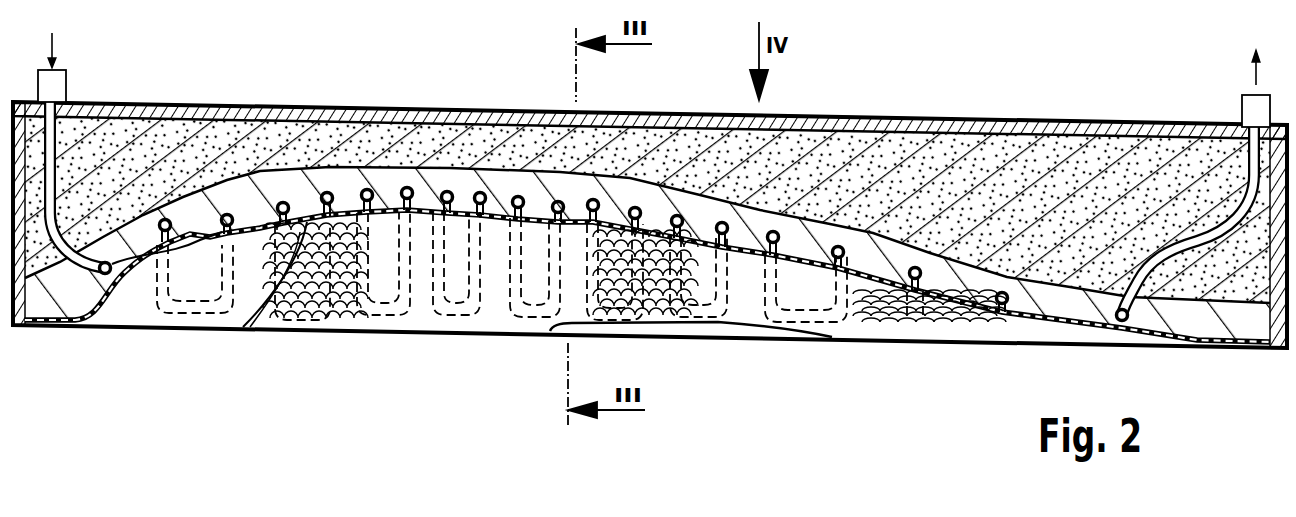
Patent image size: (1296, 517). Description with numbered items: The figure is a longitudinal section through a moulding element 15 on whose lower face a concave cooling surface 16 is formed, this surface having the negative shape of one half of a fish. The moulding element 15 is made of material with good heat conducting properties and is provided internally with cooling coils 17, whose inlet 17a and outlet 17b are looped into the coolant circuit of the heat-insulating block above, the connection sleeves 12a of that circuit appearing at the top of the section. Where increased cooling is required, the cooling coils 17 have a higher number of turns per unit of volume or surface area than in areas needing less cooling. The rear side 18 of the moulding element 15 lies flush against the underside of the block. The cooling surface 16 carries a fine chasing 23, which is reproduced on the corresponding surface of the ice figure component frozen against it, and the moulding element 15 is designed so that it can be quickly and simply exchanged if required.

The connection pipes 12a is at (60, 88).
The moulding element 15 is at (857, 365).
The cooling surface 16 is at (127, 326).
The cooling coils 17 is at (368, 190).
The inlet 17a is at (824, 160).
The outlet 17b is at (1040, 297).
The rear side 18 is at (888, 120).
The chasing 23 is at (300, 313).